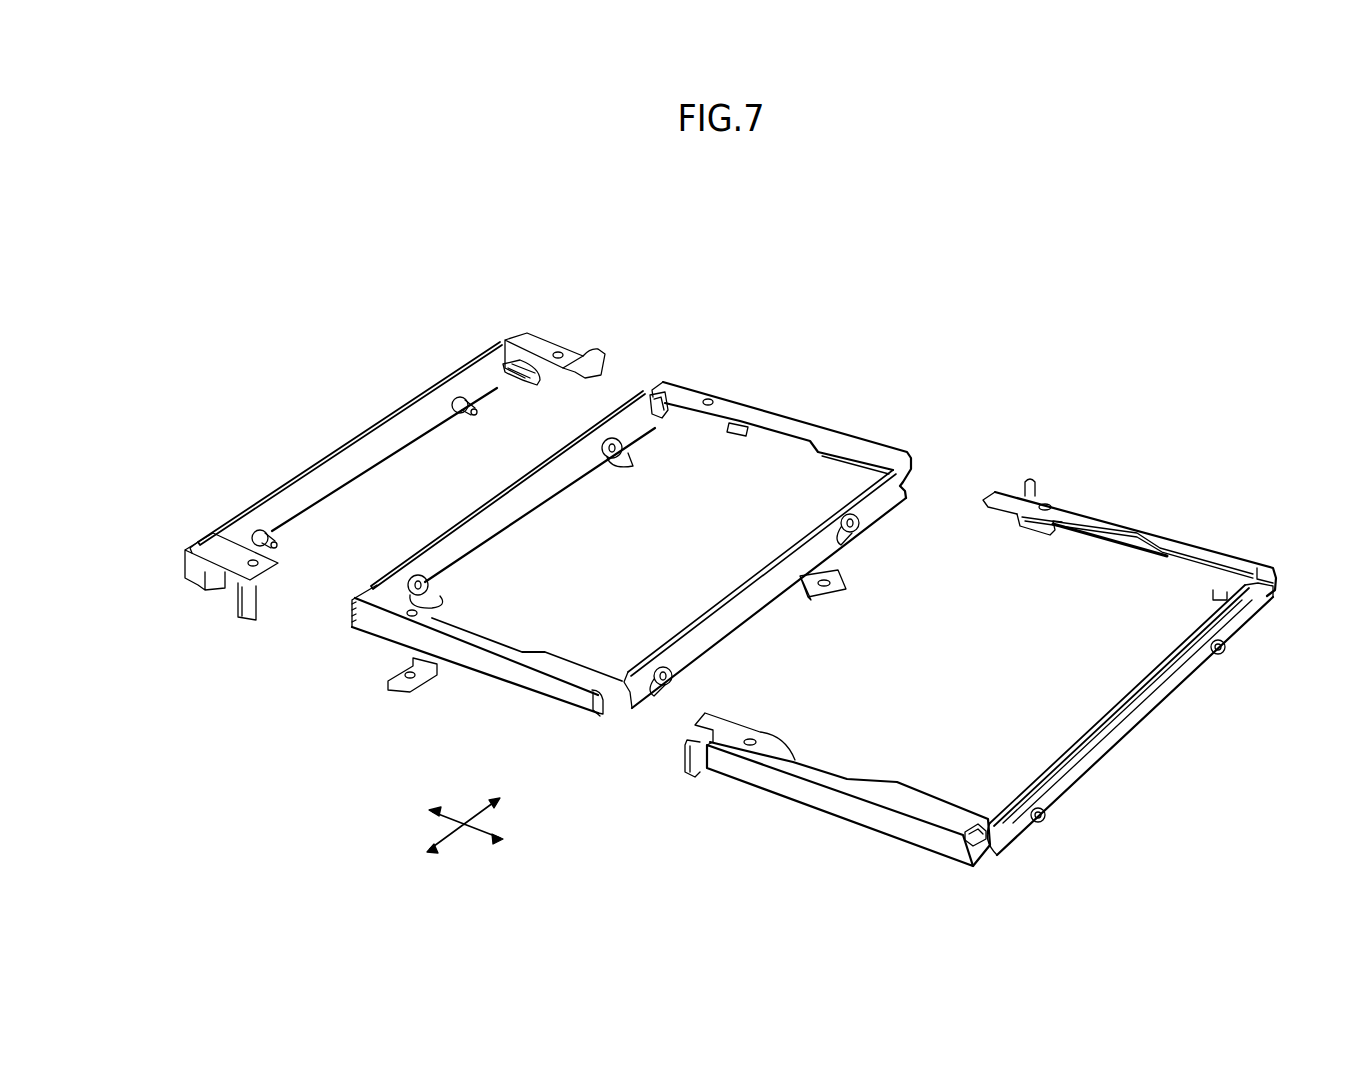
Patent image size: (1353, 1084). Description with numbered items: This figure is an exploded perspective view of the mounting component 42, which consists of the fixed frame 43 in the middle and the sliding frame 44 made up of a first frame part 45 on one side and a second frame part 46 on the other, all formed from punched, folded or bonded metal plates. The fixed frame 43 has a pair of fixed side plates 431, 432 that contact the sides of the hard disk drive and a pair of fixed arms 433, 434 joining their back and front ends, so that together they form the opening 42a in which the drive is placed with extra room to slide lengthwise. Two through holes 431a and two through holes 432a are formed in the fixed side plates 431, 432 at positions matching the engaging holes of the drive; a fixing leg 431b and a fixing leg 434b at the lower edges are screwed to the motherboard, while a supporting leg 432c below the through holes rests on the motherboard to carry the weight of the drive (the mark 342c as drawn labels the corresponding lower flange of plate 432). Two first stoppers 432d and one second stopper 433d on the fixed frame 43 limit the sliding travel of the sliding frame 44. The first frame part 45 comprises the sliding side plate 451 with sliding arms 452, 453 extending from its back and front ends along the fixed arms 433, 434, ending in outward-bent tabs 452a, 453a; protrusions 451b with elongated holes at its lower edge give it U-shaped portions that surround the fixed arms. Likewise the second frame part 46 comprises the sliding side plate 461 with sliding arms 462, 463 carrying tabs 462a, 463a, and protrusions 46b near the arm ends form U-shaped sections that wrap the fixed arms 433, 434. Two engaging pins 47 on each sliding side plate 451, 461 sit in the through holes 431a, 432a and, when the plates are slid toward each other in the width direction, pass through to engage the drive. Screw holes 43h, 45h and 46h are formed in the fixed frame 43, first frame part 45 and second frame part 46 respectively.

The mounting component 42 is at (456, 176).
The opening 42a is at (813, 477).
The fixed frame 43 is at (781, 368).
The screw hole 43h is at (710, 397).
The sliding frame 44 is at (748, 213).
The first frame part 45 is at (590, 288).
The screw hole 45h is at (562, 353).
The second frame part 46 is at (991, 405).
The protrusion 46b is at (1037, 536).
The screw hole 46h is at (1048, 502).
The engaging pin 47 is at (476, 416).
The flange 342c is at (636, 482).
The fixed side plate 431 is at (750, 600).
The through hole 431a is at (862, 520).
The fixing leg 431b is at (845, 576).
The fixed side plate 432 is at (518, 512).
The through hole 432a is at (628, 457).
The supporting leg 432c is at (452, 606).
The first stopper 432d is at (667, 420).
The fixed arm 433 is at (785, 420).
The second stopper 433d is at (740, 440).
The fixed arm 434 is at (460, 662).
The fixing leg 434b is at (388, 680).
The sliding side plate 451 is at (383, 417).
The protrusion 451b is at (536, 378).
The sliding arm 452 is at (537, 340).
The tab 452a is at (605, 360).
The sliding arm 453 is at (200, 583).
The tab 453a is at (245, 620).
The sliding side plate 461 is at (1136, 722).
The sliding arm 462 is at (1155, 527).
The tab 462a is at (1027, 480).
The sliding arm 463 is at (832, 804).
The tab 463a is at (690, 778).